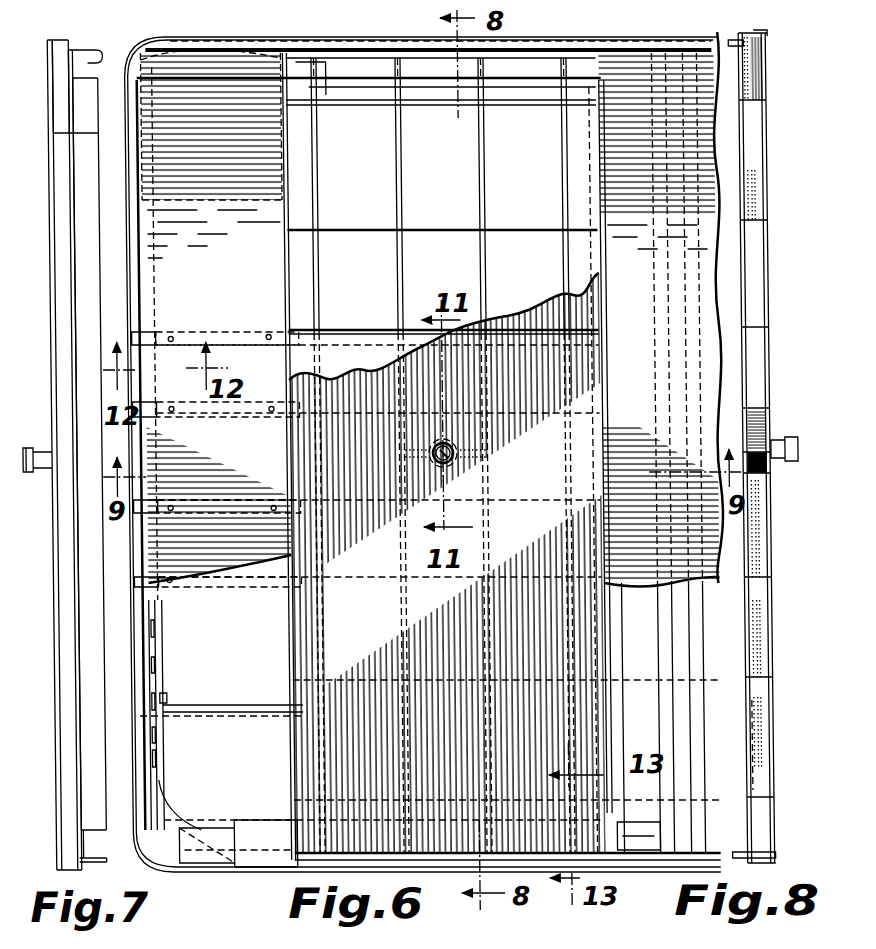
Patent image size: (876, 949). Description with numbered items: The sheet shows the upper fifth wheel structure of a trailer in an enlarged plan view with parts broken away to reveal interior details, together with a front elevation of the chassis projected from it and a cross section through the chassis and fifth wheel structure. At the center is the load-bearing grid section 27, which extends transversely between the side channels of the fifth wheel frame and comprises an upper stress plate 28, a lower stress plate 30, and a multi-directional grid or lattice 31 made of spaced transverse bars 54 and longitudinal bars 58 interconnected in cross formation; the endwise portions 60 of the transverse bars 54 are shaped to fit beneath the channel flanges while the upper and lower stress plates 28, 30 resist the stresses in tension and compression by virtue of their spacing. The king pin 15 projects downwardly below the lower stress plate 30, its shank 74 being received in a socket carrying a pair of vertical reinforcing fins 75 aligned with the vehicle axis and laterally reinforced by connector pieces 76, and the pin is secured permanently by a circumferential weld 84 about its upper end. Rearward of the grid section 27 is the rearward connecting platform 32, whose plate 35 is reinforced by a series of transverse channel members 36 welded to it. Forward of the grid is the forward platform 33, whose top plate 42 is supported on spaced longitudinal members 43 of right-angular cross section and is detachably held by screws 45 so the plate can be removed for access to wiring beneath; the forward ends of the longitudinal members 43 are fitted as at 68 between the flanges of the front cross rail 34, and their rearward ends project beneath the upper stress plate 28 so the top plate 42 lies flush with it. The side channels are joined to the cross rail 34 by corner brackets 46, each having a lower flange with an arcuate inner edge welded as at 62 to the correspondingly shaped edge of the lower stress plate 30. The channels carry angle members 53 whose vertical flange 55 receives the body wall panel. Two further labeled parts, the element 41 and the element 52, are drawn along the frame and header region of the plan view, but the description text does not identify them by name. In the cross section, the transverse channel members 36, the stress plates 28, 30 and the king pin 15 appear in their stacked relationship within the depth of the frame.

In FIG. 7, the king pin 15 is at (36, 448).
In FIG. 8, the king pin 15 is at (790, 461).
In FIG. 6, the load-bearing grid section 27 is at (437, 835).
In FIG. 6, the upper stress plate 28 is at (526, 306).
In FIG. 8, the upper stress plate 28 is at (748, 735).
In FIG. 8, the lower stress plate 30 is at (775, 645).
In FIG. 6, the multi-directional grid or lattice 31 is at (405, 170).
In FIG. 6, the rearward connecting platform 32 is at (681, 66).
In FIG. 6, the forward platform 33 is at (170, 155).
In FIG. 7, the front cross rail 34 is at (57, 604).
In FIG. 6, the front cross rail 34 is at (143, 623).
In FIG. 6, the plate 35 is at (711, 566).
In FIG. 6, the transverse channel members 36 is at (700, 648).
In FIG. 6, the inner stile 41 is at (616, 668).
In FIG. 6, the top plate 42 is at (165, 243).
In FIG. 6, the longitudinal members 43 is at (244, 710).
In FIG. 6, the screws 45 is at (172, 205).
In FIG. 7, the corner brackets 46 is at (58, 62).
In FIG. 6, the corner brackets 46 is at (141, 54).
In FIG. 6, the header 52 is at (538, 62).
In FIG. 7, the angle members 53 is at (95, 865).
In FIG. 6, the angle members 53 is at (580, 42).
In FIG. 6, the transverse bars 54 is at (571, 181).
In FIG. 8, the transverse bars 54 is at (760, 748).
In FIG. 7, the vertical flange 55 is at (100, 62).
In FIG. 8, the vertical flange 55 is at (741, 853).
In FIG. 6, the longitudinal bars 58 is at (362, 233).
In FIG. 8, the longitudinal bars 58 is at (762, 222).
In FIG. 6, the endwise portions 60 is at (332, 84).
In FIG. 6, the weld 62 is at (163, 812).
In FIG. 6, the fitted forward end portions 68 is at (158, 700).
In FIG. 6, the shank 74 is at (449, 467).
In FIG. 6, the vertical reinforcing fins 75 is at (488, 464).
In FIG. 6, the connector pieces 76 is at (427, 499).
In FIG. 8, the connector pieces 76 is at (768, 421).
In FIG. 6, the circumferential weld 84 is at (460, 447).